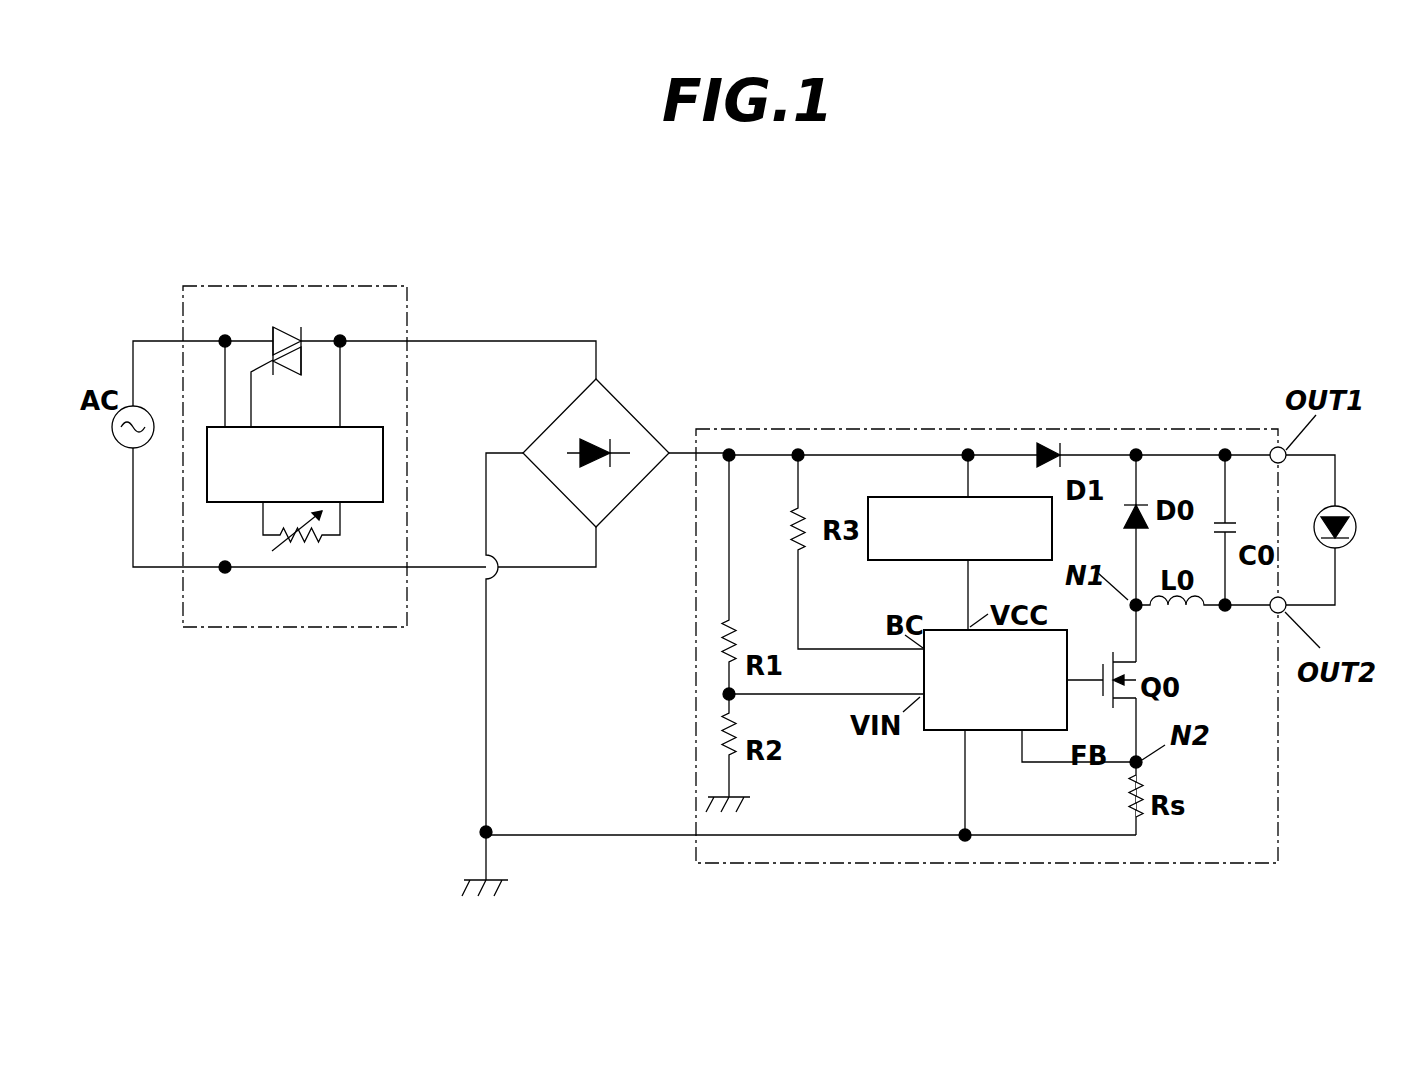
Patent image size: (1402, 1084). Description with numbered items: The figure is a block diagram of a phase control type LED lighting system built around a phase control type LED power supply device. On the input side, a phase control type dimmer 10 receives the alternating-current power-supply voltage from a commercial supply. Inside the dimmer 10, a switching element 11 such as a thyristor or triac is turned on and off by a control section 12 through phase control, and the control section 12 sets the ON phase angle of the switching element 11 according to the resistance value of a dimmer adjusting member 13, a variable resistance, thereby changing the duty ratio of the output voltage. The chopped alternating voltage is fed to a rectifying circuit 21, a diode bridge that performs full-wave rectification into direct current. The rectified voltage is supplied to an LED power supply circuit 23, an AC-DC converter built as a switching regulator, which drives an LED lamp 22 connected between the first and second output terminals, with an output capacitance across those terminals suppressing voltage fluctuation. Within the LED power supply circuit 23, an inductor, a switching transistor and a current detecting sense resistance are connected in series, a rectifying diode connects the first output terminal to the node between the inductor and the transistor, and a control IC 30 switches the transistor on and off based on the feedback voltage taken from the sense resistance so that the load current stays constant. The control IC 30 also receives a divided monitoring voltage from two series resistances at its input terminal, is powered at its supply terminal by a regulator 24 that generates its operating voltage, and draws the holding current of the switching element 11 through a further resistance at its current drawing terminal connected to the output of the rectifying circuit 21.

The phase control type dimmer 10 is at (278, 630).
The switching element 11 is at (288, 310).
The control section 12 is at (368, 427).
The dimmer adjusting member 13 is at (318, 545).
The rectifying circuit 21 is at (617, 402).
The LED lamp 22 is at (1345, 510).
The LED power supply circuit 23 is at (1082, 428).
The regulator 24 is at (882, 565).
The switching control semiconductor integrated circuit 30 is at (937, 732).